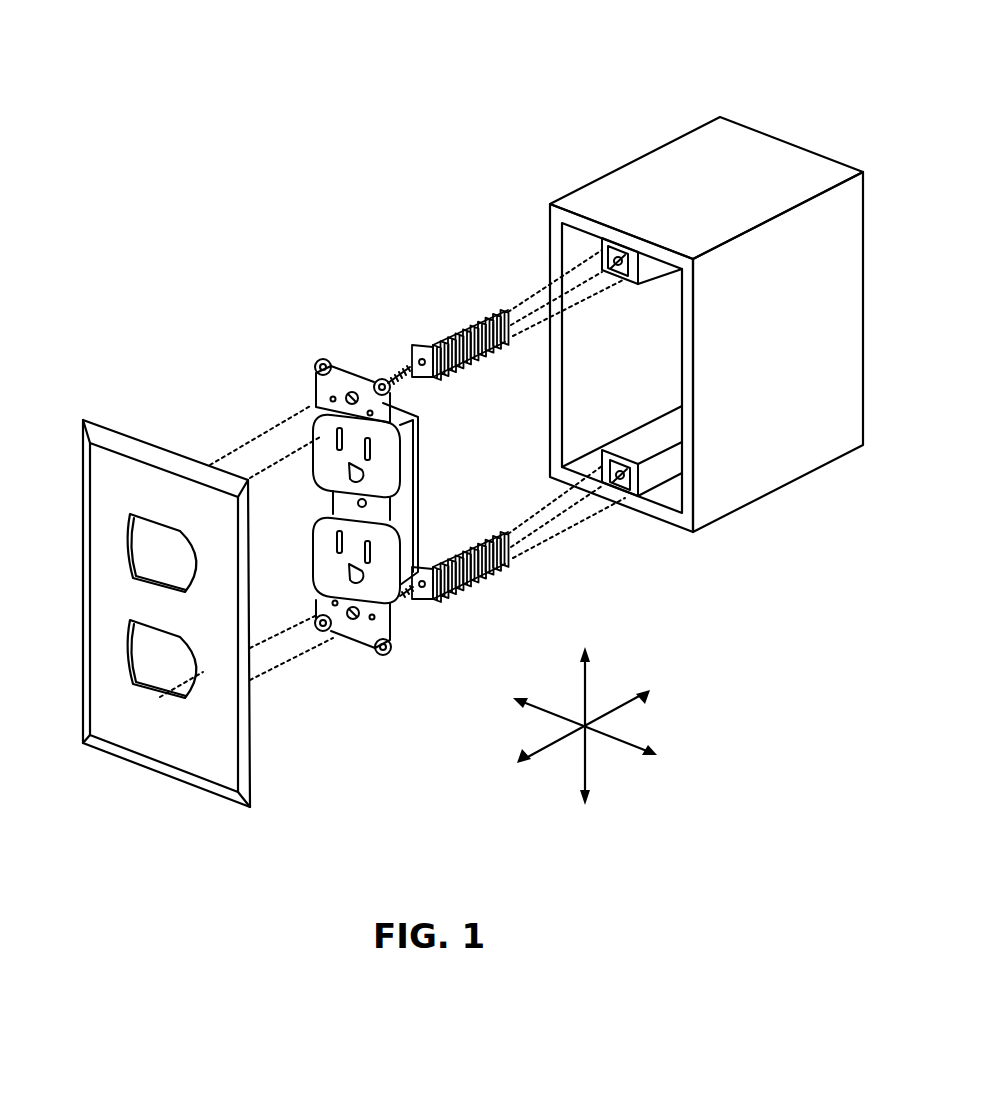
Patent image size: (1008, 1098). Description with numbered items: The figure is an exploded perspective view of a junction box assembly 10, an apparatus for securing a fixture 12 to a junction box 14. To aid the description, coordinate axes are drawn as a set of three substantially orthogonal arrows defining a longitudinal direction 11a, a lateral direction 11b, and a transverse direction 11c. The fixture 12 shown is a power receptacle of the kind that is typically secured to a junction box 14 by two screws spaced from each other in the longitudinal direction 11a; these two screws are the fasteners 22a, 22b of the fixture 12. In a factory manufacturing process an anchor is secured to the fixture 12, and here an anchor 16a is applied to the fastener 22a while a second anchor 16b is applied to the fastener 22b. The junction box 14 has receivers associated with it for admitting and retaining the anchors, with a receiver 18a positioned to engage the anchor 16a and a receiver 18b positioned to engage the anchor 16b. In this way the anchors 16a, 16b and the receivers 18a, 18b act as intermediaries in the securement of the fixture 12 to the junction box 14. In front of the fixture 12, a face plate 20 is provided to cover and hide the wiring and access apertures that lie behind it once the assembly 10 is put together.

The junction box assembly 10 is at (251, 74).
The longitudinal direction 11a is at (586, 688).
The lateral direction 11b is at (625, 745).
The transverse direction 11c is at (623, 707).
The fixture 12 is at (306, 426).
The junction box 14 is at (586, 175).
The anchor 16a is at (455, 314).
The anchor 16b is at (460, 535).
The receiver 18a is at (620, 297).
The receiver 18b is at (627, 438).
The face plate 20 is at (210, 808).
The fastener 22a is at (398, 368).
The fastener 22b is at (405, 595).